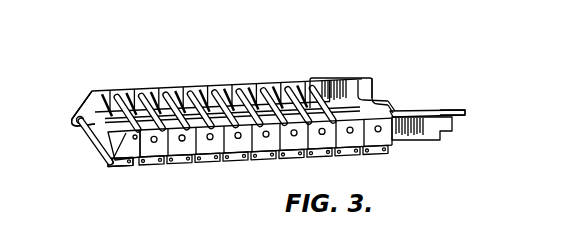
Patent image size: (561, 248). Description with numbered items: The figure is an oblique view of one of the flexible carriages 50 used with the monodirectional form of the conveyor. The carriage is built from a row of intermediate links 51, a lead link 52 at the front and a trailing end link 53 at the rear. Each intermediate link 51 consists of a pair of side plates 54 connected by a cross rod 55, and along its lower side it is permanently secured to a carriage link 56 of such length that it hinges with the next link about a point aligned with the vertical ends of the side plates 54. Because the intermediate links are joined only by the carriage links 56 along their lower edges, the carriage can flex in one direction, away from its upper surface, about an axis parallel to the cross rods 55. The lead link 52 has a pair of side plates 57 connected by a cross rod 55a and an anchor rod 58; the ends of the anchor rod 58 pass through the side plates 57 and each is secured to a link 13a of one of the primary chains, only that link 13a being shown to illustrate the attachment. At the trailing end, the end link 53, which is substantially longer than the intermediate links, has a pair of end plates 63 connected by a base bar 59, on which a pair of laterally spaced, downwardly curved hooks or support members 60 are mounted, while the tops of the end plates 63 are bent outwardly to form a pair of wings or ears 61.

The link 13a is at (118, 168).
The flexible carriage 50 is at (388, 70).
The intermediate link 51 is at (150, 80).
The lead link 52 is at (86, 87).
The end link 53 is at (340, 75).
The side plate 54 is at (165, 88).
The cross rod 55 is at (197, 96).
The cross rod 55a is at (110, 94).
The carriage link 56 is at (212, 158).
The side plate 57 is at (90, 105).
The anchor rod 58 is at (83, 137).
The base bar 59 is at (440, 110).
The support member 60 is at (391, 102).
The wing 61 is at (457, 113).
The end plate 63 is at (340, 82).